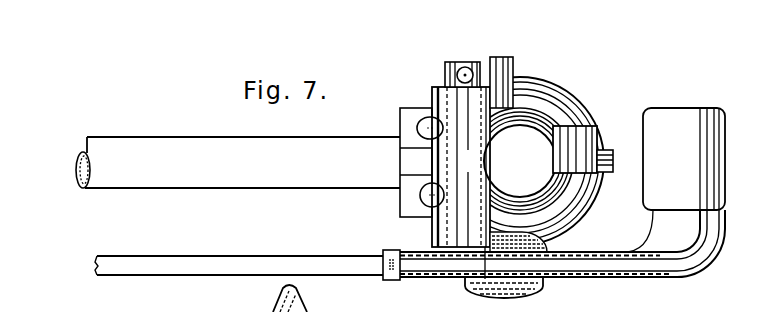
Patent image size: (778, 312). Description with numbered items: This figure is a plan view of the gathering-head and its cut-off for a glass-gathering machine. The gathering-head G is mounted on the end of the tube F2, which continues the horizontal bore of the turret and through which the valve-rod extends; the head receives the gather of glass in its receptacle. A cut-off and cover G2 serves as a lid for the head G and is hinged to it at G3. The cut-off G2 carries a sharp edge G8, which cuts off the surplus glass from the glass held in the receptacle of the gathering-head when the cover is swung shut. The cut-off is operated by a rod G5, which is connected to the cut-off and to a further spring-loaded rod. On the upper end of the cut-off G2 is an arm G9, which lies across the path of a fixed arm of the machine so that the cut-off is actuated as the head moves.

The tube F2 is at (152, 175).
The gathering-head G is at (548, 108).
The cut-off and cover G2 is at (682, 128).
The hinge G3 is at (465, 74).
The rod G5 is at (190, 267).
The sharp edge G8 is at (643, 185).
The arm G9 is at (442, 265).